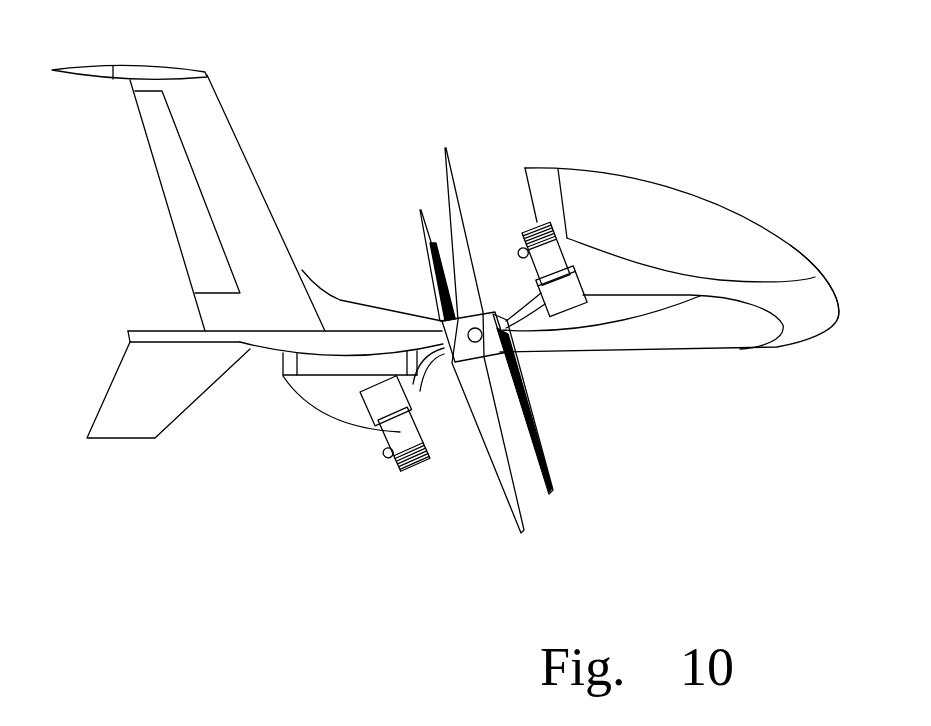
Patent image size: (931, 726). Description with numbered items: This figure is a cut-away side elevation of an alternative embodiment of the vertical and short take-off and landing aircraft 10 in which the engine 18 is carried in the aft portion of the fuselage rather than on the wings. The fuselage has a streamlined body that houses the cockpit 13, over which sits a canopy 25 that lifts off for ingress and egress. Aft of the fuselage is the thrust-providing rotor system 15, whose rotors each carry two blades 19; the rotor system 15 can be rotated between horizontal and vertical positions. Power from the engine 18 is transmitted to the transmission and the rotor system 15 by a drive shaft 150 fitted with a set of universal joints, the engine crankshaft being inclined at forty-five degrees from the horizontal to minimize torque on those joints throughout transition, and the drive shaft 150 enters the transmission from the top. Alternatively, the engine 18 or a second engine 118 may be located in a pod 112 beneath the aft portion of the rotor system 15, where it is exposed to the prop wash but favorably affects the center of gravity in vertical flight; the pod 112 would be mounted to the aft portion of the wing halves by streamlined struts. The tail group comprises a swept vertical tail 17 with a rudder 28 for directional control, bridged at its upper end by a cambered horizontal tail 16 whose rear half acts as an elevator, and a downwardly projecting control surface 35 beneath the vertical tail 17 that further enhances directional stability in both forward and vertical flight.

The vertical and short take-off and landing aircraft 10 is at (513, 93).
The cockpit 13 is at (663, 222).
The rotor system 15 is at (427, 162).
The horizontal tail 16 is at (137, 65).
The vertical tail 17 is at (233, 213).
The engine 18 is at (560, 297).
The blade 19 is at (536, 444).
The canopy 25 is at (758, 222).
The rudder 28 is at (168, 152).
The downwardly projecting control surface 35 is at (183, 383).
The pod 112 is at (333, 413).
The second engine 118 is at (393, 432).
The drive shaft 150 is at (418, 388).